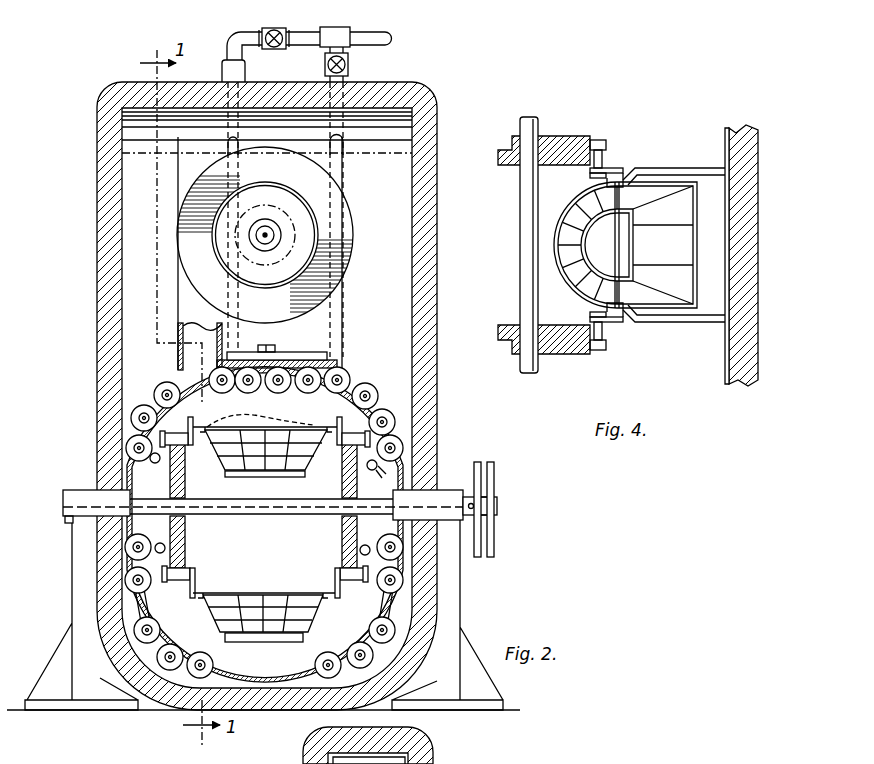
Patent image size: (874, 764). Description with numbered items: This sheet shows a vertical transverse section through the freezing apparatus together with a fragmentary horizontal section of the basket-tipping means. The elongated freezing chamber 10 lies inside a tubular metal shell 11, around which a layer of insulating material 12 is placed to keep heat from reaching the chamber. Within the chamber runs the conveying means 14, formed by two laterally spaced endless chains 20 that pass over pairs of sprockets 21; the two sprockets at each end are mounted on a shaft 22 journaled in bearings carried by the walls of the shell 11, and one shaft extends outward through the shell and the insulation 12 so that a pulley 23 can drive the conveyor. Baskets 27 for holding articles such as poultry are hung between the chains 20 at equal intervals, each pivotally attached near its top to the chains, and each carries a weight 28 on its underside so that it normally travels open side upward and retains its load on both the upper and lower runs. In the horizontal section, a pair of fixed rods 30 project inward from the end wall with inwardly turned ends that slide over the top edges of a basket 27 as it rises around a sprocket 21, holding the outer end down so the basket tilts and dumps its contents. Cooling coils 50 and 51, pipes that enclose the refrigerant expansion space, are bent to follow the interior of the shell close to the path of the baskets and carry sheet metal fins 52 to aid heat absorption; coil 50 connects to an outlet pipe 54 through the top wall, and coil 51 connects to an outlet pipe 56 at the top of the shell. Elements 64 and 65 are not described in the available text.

In FIG. 2, the freezing chamber 10 is at (252, 385).
In FIG. 2, the metal shell 11 is at (362, 374).
In FIG. 4, the metal shell 11 is at (728, 128).
In FIG. 2, the insulating material 12 is at (428, 95).
In FIG. 4, the insulating material 12 is at (753, 240).
In FIG. 2, the conveying means 14 is at (248, 588).
In FIG. 2, the endless chains 20 is at (156, 461).
In FIG. 4, the endless chains 20 is at (597, 140).
In FIG. 2, the sprockets 21 is at (185, 470).
In FIG. 4, the sprockets 21 is at (562, 151).
In FIG. 2, the shaft 22 is at (242, 514).
In FIG. 4, the shaft 22 is at (520, 297).
In FIG. 2, the pulley 23 is at (491, 470).
In FIG. 2, the basket 27 is at (313, 428).
In FIG. 4, the basket 27 is at (658, 200).
In FIG. 2, the weight 28 is at (275, 478).
In FIG. 4, the weight 28 is at (599, 250).
In FIG. 4, the fixed rods 30 is at (698, 170).
In FIG. 2, the cooling coil 50 is at (143, 610).
In FIG. 2, the cooling coil 51 is at (394, 471).
In FIG. 2, the sheet metal fins 52 is at (200, 652).
In FIG. 2, the outlet pipe 54 is at (245, 30).
In FIG. 2, the outlet pipe 56 is at (343, 170).
In FIG. 2, the casing wall 64 is at (178, 358).
In FIG. 2, the impeller 65 is at (351, 228).